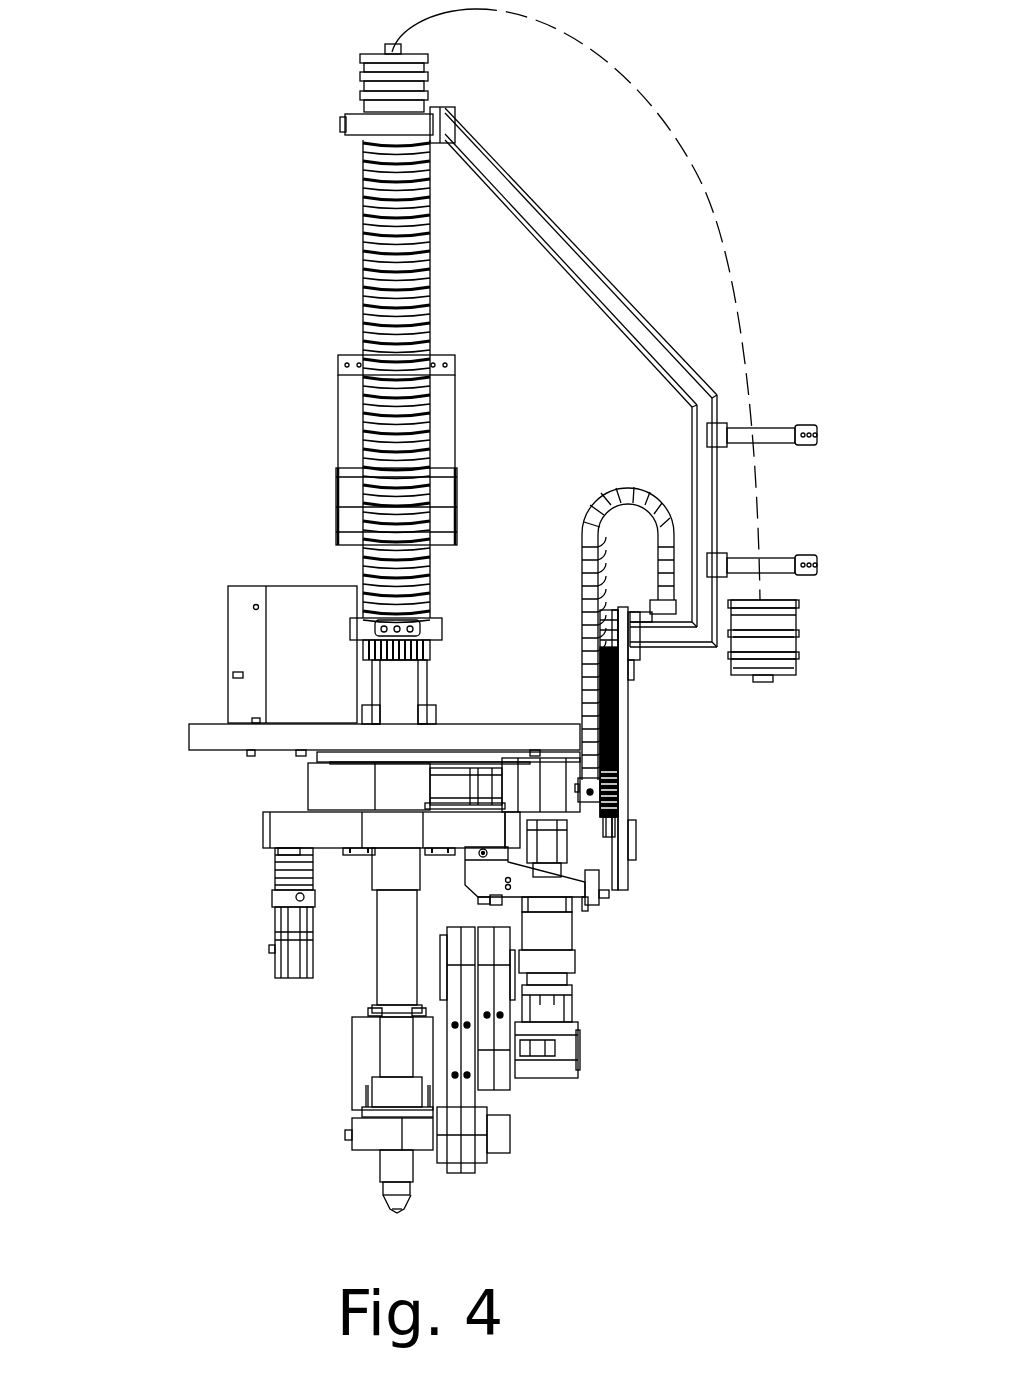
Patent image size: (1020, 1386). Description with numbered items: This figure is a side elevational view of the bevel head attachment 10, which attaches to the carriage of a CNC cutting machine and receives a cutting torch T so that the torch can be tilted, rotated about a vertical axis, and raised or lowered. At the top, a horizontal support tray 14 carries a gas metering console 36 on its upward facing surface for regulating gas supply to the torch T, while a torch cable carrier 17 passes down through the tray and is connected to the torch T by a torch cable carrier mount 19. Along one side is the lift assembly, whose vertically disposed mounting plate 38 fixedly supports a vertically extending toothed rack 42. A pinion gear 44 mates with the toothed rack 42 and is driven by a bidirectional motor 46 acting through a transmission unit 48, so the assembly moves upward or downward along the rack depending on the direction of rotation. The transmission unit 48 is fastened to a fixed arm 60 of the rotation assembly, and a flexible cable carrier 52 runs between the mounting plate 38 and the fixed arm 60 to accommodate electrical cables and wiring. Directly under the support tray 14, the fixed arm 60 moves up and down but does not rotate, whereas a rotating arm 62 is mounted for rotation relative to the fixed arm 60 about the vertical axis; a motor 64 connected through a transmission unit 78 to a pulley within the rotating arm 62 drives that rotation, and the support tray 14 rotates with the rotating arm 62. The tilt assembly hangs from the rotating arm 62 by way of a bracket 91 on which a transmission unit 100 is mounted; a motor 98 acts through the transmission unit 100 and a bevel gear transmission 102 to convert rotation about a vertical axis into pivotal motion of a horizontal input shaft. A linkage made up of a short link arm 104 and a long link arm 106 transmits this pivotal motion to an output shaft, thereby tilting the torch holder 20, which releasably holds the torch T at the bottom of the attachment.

The bevel head attachment 10 is at (172, 362).
The horizontal support tray 14 is at (190, 736).
The torch cable carrier 17 is at (375, 990).
The torch cable carrier mount 19 is at (352, 1050).
The torch holder 20 is at (355, 1150).
The gas metering console 36 is at (300, 586).
The mounting plate 38 is at (630, 692).
The toothed rack 42 is at (615, 716).
The pinion gear 44 is at (620, 790).
The bidirectional motor 46 is at (455, 775).
The transmission unit 48 is at (525, 765).
The flexible cable carrier 52 is at (612, 482).
The fixed arm 60 is at (308, 786).
The rotating arm 62 is at (263, 828).
The motor 64 is at (275, 960).
The transmission unit 78 is at (275, 880).
The bracket 91 is at (470, 870).
The motor 98 is at (567, 852).
The transmission unit 100 is at (575, 945).
The bevel gear transmission 102 is at (580, 1022).
The short link arm 104 is at (500, 1090).
The long link arm 106 is at (470, 1170).
The cutting torch T is at (390, 1210).